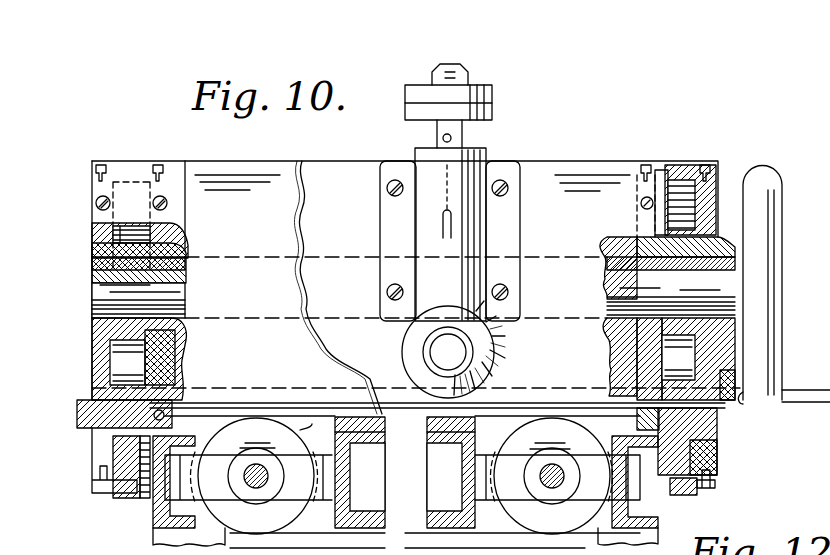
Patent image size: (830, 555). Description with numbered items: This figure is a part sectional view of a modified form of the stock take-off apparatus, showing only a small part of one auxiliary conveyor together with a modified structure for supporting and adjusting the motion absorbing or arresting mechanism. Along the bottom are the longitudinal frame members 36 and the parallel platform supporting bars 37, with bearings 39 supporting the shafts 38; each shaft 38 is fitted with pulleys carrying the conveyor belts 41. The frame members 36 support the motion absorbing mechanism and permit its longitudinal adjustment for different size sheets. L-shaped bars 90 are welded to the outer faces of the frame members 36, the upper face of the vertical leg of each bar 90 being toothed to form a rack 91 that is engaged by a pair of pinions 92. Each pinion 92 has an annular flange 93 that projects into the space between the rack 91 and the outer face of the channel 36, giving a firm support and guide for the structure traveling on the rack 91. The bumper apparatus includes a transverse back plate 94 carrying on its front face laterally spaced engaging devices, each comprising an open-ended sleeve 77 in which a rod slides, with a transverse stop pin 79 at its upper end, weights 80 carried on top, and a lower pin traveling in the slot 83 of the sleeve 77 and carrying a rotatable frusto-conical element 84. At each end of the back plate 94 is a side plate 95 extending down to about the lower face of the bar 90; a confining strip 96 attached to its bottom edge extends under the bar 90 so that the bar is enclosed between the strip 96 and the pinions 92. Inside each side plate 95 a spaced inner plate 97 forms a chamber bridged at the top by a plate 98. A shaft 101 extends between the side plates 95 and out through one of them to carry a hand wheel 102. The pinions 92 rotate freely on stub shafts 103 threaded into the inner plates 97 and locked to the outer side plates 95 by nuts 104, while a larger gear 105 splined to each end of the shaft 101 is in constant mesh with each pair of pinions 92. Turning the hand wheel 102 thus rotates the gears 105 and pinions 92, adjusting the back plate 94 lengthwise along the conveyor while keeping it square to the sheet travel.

The longitudinal frame member 36 is at (165, 523).
The platform supporting bar 37 is at (350, 495).
The shaft 38 is at (235, 554).
The bearing 39 is at (552, 490).
The conveyor belt 41 is at (348, 545).
The sleeve 77 is at (463, 170).
The stop pin 79 is at (466, 138).
The weight 80 is at (495, 96).
The slot 83 is at (443, 224).
The frusto-conical element 84 is at (422, 352).
The L-shaped bar 90 is at (130, 480).
The rack 91 is at (712, 445).
The pinion 92 is at (715, 425).
The annular flange 93 is at (705, 463).
The back plate 94 is at (571, 210).
The side plate 95 is at (110, 358).
The confining strip 96 is at (110, 495).
The inner side plate 97 is at (159, 357).
The bridging plate 98 is at (686, 170).
The shaft 101 is at (110, 288).
The hand wheel 102 is at (760, 211).
The stub shaft 103 is at (722, 392).
The nut 104 is at (90, 412).
The gear 105 is at (118, 236).